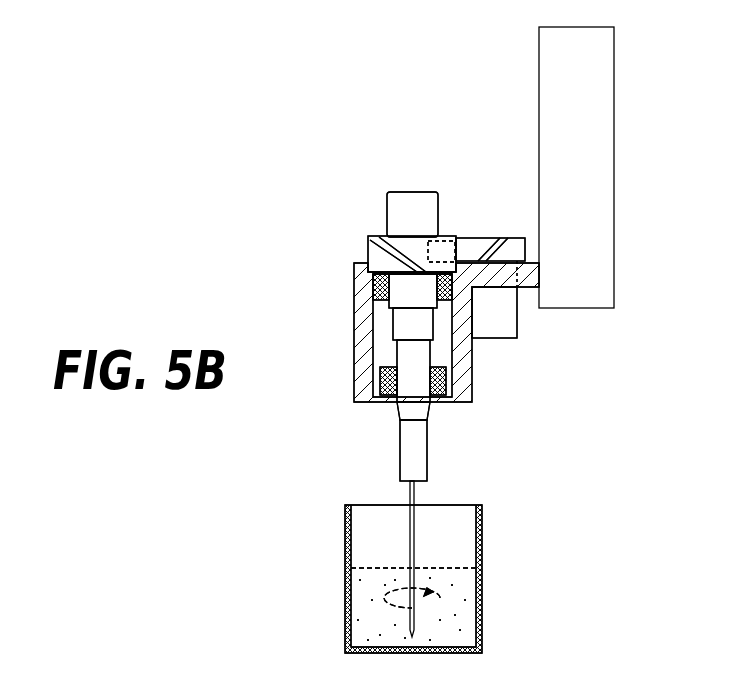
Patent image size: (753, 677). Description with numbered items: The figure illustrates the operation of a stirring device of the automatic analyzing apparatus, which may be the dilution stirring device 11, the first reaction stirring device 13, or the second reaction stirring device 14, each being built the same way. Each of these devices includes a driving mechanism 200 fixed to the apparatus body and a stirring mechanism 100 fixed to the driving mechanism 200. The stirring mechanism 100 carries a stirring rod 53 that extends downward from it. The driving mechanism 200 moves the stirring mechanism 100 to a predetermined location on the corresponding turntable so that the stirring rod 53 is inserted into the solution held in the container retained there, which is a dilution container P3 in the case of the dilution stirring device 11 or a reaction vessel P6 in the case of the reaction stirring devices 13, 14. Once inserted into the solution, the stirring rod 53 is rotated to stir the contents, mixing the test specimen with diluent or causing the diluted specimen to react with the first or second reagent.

The stirring mechanism 100 is at (280, 208).
The driving mechanism 200 is at (541, 110).
The stirring rod 53 is at (415, 523).
The dilution container P3 is at (482, 547).
The reaction vessel P6 is at (489, 573).
The dilution stirring device 11 is at (97, 88).
The first reaction stirring device 13 is at (142, 88).
The second reaction stirring device 14 is at (192, 88).